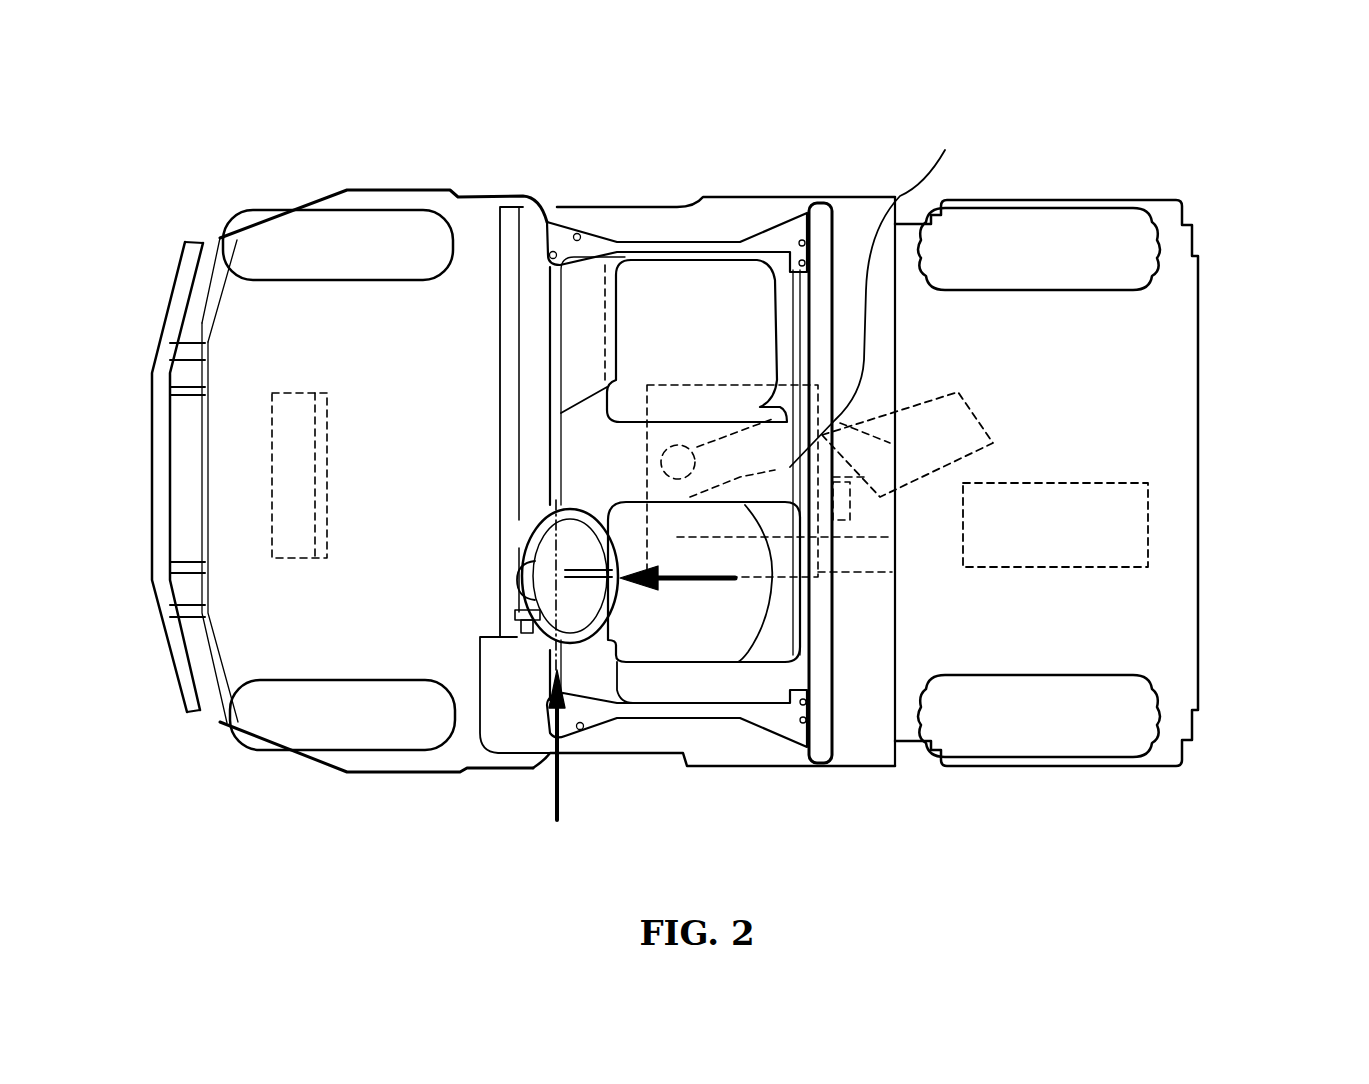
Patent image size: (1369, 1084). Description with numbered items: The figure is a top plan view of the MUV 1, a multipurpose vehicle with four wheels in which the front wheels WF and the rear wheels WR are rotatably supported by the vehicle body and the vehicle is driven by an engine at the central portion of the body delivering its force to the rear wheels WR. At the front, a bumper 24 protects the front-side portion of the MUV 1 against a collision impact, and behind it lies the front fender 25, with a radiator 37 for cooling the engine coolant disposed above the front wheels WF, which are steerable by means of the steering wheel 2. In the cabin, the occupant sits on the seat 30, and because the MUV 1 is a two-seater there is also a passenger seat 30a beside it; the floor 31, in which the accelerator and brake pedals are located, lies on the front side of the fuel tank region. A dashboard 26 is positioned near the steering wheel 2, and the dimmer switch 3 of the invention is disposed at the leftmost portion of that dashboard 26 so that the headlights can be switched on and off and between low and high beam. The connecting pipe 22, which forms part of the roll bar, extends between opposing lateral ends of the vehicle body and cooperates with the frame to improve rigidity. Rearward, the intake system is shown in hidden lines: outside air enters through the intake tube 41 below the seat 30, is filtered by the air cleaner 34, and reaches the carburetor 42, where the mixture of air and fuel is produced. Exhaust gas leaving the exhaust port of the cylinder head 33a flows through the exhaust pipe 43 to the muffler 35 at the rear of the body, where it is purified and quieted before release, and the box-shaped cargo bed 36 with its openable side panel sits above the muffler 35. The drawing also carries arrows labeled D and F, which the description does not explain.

The MUV 1 is at (168, 79).
The steering wheel 2 is at (591, 642).
The dimmer switch 3 is at (519, 648).
The connecting pipe 22 is at (832, 207).
The bumper 24 is at (163, 392).
The front fender 25 is at (436, 420).
The dashboard 26 is at (503, 583).
The seat 30 is at (720, 640).
The passenger seat 30a is at (710, 290).
The floor 31 is at (608, 223).
The cylinder head 33a is at (945, 150).
The air cleaner 34 is at (977, 417).
The muffler 35 is at (1133, 513).
The cargo bed 36 is at (1088, 622).
The radiator 37 is at (290, 512).
The intake tube 41 is at (700, 432).
The carburetor 42 is at (846, 500).
The exhaust pipe 43 is at (697, 540).
The front wheels WF is at (230, 236).
The rear wheels WR is at (1017, 210).
The direction arrow D is at (558, 673).
The forward direction arrow F is at (677, 589).